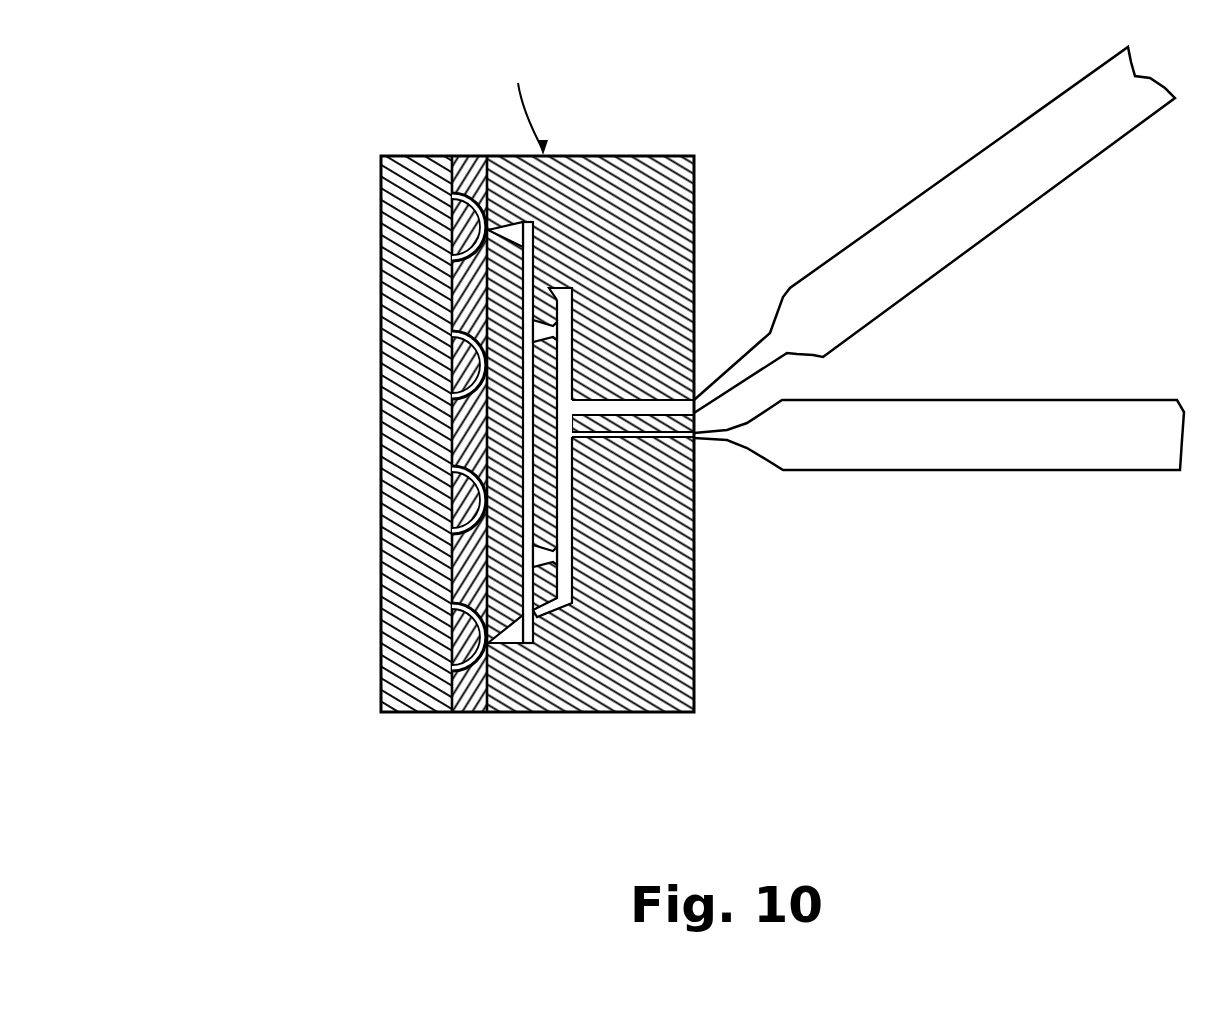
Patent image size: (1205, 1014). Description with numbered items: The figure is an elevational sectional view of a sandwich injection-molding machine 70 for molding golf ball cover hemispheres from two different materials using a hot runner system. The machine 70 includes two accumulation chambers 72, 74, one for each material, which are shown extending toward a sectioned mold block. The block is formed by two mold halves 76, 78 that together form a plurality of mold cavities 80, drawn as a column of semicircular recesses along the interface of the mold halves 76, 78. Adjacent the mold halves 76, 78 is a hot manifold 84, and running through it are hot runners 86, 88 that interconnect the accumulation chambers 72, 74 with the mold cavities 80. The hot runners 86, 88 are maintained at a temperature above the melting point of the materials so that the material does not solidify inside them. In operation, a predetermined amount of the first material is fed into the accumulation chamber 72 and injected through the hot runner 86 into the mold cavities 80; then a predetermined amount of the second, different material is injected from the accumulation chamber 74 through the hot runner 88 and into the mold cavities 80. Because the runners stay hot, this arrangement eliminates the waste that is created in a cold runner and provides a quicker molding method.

The sandwich injection-molding machine 70 is at (262, 86).
The accumulation chamber 72 is at (847, 247).
The accumulation chamber 74 is at (928, 399).
The mold half 76 is at (420, 713).
The mold half 78 is at (470, 713).
The mold cavities 80 is at (468, 229).
The hot manifold 84 is at (695, 237).
The hot runner 86 is at (567, 507).
The hot runner 88 is at (495, 644).